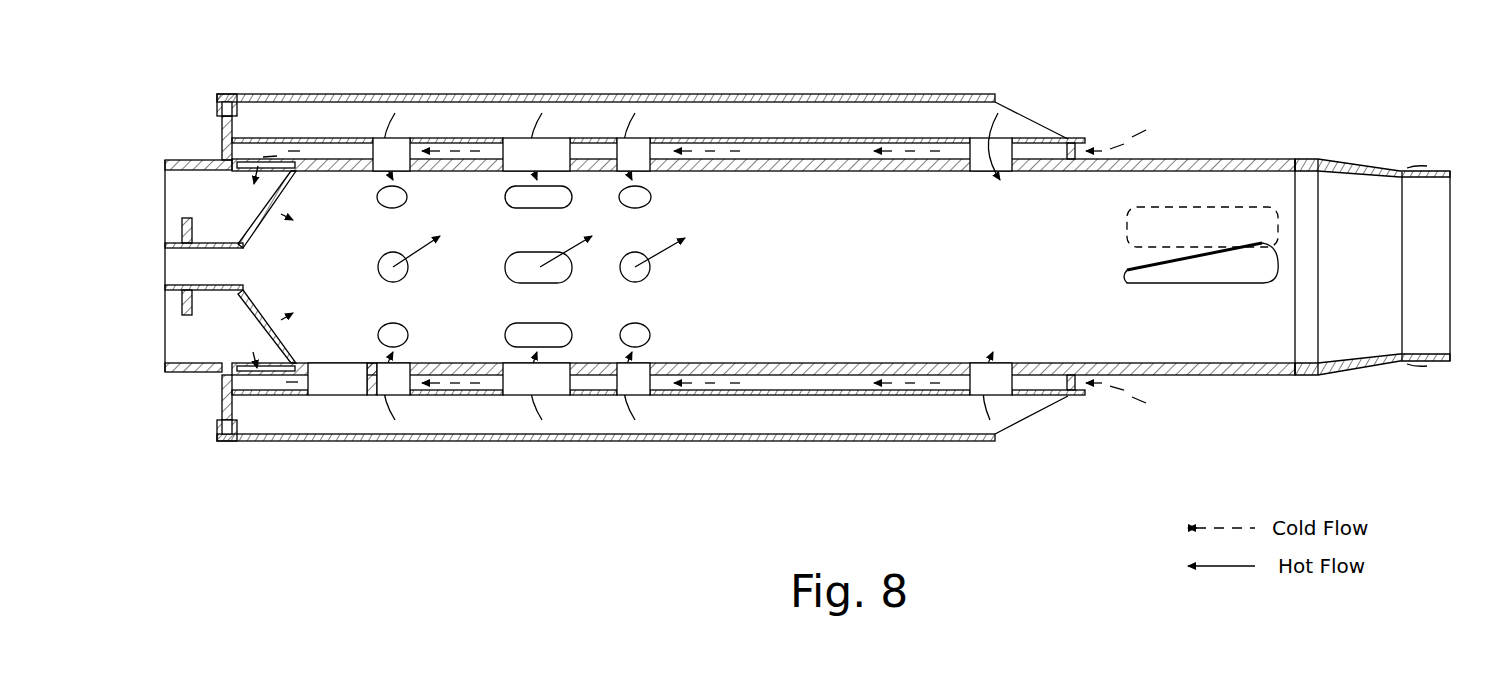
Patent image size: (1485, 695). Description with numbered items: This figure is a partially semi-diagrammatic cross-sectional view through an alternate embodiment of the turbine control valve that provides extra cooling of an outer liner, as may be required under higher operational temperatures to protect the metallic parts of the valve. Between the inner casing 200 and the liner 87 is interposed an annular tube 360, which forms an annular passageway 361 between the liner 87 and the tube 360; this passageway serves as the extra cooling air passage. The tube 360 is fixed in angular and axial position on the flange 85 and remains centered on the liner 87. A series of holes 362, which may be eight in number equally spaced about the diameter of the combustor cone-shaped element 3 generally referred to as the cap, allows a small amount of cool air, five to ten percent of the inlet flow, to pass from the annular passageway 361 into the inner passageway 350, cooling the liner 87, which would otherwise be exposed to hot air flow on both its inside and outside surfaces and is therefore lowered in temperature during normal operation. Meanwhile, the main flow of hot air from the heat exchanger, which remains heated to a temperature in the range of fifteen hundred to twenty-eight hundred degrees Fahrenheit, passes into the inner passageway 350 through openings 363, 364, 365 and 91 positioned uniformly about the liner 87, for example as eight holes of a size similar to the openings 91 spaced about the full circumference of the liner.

The inner casing 200 is at (832, 95).
The flange 85 is at (230, 441).
The tube 360 is at (708, 138).
The annular passageway 361 is at (766, 150).
The liner 87 is at (775, 171).
The inner passageway 350 is at (806, 315).
The opening 91 is at (978, 171).
The holes 362 is at (262, 212).
The combustor cone-shaped element 3 is at (282, 350).
The opening 363 is at (405, 365).
The opening 364 is at (558, 372).
The opening 365 is at (648, 363).